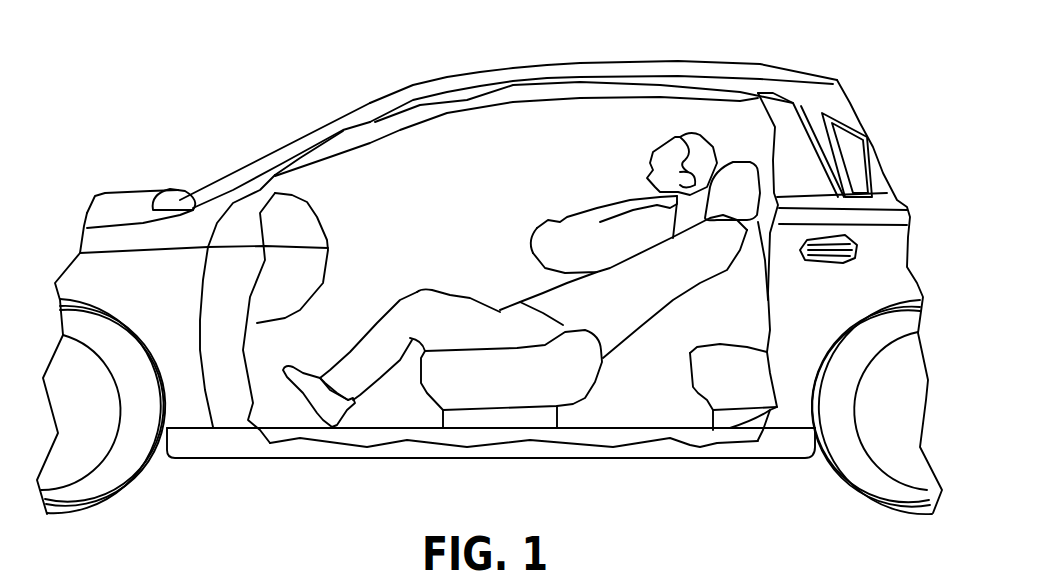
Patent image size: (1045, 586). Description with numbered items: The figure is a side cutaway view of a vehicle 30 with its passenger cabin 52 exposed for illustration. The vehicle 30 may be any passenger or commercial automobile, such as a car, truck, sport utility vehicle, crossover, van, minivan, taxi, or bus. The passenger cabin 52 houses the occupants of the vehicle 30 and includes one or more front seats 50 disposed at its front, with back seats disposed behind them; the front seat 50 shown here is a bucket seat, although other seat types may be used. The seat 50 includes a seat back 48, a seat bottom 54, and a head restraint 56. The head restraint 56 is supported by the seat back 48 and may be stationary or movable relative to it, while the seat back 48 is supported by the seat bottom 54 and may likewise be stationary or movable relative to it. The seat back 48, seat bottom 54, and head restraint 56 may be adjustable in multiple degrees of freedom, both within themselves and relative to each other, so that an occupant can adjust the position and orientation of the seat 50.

The vehicle 30 is at (285, 107).
The seat back 48 is at (647, 287).
The seat 50 is at (596, 380).
The passenger cabin 52 is at (598, 140).
The seat bottom 54 is at (500, 378).
The head restraint 56 is at (740, 190).